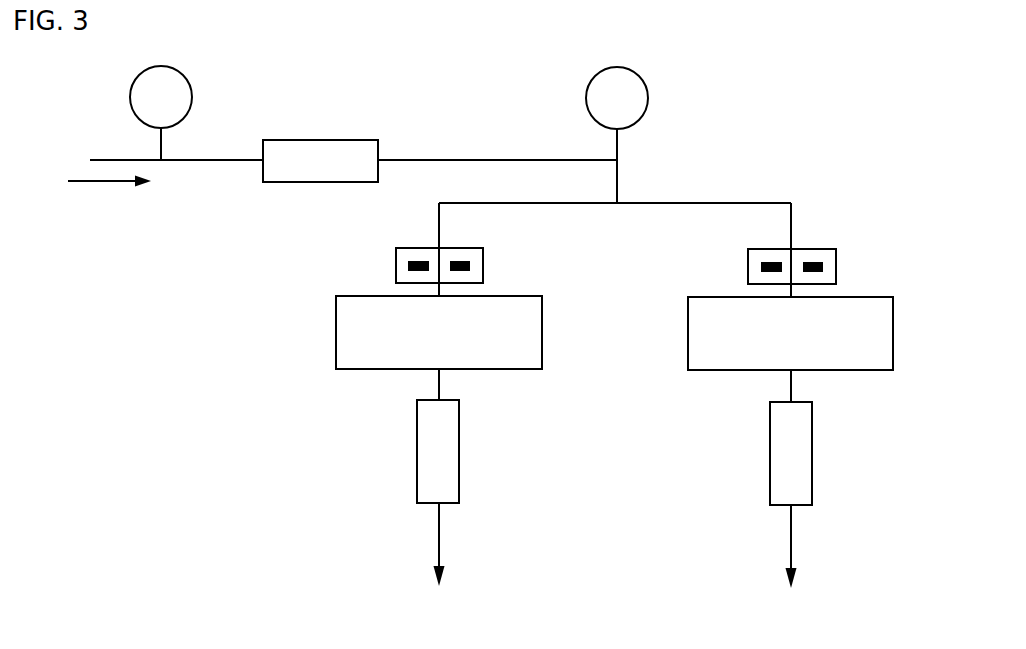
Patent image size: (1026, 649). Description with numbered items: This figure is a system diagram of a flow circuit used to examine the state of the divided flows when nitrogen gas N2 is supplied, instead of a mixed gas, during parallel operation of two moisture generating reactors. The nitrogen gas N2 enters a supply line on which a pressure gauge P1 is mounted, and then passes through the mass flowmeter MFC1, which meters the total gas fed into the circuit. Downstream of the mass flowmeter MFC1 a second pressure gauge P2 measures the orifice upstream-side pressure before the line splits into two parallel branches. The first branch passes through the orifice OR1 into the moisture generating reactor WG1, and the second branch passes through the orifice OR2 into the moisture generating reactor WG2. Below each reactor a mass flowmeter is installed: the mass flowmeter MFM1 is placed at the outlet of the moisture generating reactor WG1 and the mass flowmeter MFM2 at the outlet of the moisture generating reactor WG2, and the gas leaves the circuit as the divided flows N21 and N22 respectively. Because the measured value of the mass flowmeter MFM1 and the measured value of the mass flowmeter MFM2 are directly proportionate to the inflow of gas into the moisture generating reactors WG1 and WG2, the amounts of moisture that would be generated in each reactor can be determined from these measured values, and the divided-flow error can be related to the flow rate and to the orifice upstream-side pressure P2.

The nitrogen gas N2 is at (92, 182).
The pressure gauge P1 is at (161, 113).
The mass flowmeter MFC1 is at (322, 140).
The orifice upstream-side pressure gauge P2 is at (617, 98).
The orifice OR1 is at (483, 262).
The orifice OR2 is at (836, 263).
The moisture generating reactor WG1 is at (336, 350).
The moisture generating reactor WG2 is at (688, 350).
The mass flowmeter MFM1 is at (417, 457).
The mass flowmeter MFM2 is at (770, 458).
The divided nitrogen gas flow N21 is at (446, 564).
The divided nitrogen gas flow N22 is at (796, 566).